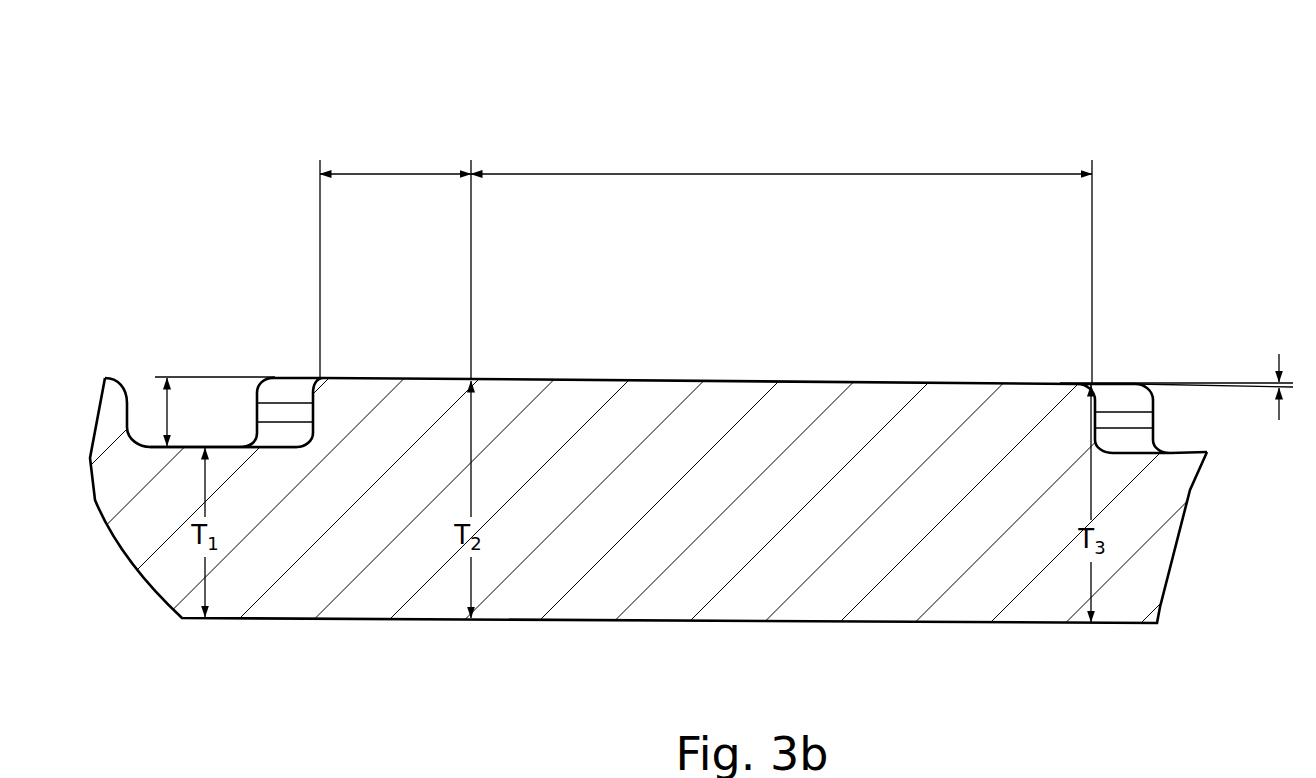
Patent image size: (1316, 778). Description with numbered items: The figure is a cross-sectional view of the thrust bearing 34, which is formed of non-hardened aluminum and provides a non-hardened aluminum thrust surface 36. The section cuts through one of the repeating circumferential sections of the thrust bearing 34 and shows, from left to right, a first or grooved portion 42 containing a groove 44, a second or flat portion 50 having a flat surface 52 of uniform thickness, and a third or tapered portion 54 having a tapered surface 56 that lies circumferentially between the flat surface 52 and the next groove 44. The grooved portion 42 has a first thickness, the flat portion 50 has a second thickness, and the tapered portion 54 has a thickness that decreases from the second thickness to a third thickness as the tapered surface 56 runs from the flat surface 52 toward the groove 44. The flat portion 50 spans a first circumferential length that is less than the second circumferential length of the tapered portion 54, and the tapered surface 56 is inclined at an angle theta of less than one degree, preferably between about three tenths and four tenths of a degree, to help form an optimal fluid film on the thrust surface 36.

The thrust bearing 34 is at (240, 664).
The thrust surface 36 is at (1111, 358).
The grooved portion 42 is at (193, 356).
The groove 44 is at (215, 446).
The flat portion 50 is at (425, 138).
The flat surface 52 is at (403, 378).
The tapered portion 54 is at (817, 140).
The tapered surface 56 is at (800, 382).